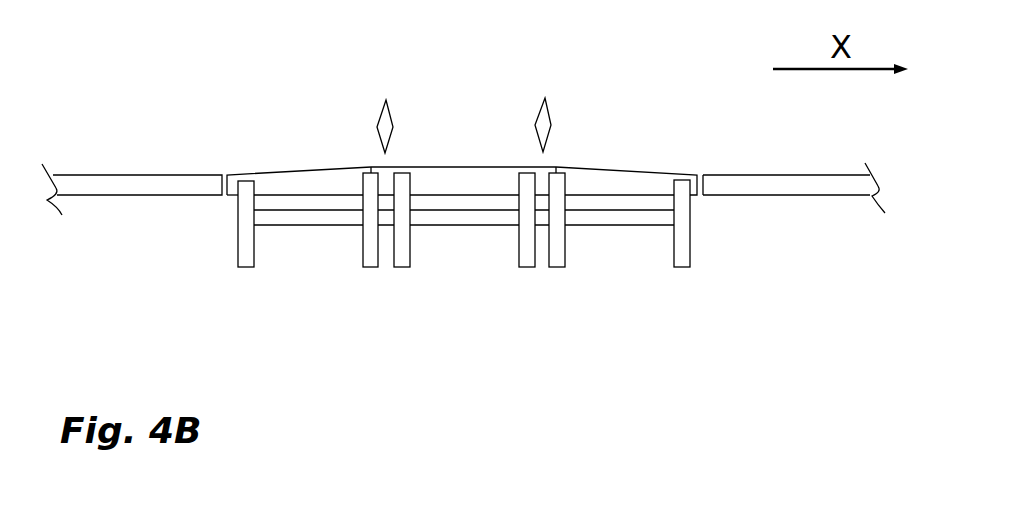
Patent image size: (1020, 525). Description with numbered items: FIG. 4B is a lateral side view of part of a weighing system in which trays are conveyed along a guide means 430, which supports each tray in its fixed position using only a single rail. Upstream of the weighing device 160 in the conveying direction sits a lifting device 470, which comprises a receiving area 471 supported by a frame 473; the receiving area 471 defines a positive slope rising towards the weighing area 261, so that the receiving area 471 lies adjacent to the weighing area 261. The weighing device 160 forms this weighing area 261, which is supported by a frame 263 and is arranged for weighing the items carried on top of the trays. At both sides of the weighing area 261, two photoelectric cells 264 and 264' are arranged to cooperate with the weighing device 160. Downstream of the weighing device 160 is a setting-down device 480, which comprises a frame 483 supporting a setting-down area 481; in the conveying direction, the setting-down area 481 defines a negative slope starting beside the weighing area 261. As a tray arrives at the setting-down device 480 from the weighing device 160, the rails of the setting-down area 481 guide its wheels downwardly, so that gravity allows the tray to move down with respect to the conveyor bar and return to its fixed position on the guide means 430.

The guide means 430 is at (90, 183).
The lifting device 470 is at (236, 142).
The receiving area 471 is at (303, 170).
The frame 473 is at (238, 223).
The frame 263 is at (457, 225).
The weighing area 261 is at (427, 167).
The photoelectric cell 264 is at (354, 80).
The photoelectric cell 264' is at (579, 76).
The weighing device 160 is at (495, 121).
The setting-down device 480 is at (668, 140).
The setting-down area 481 is at (600, 168).
The frame 483 is at (749, 223).